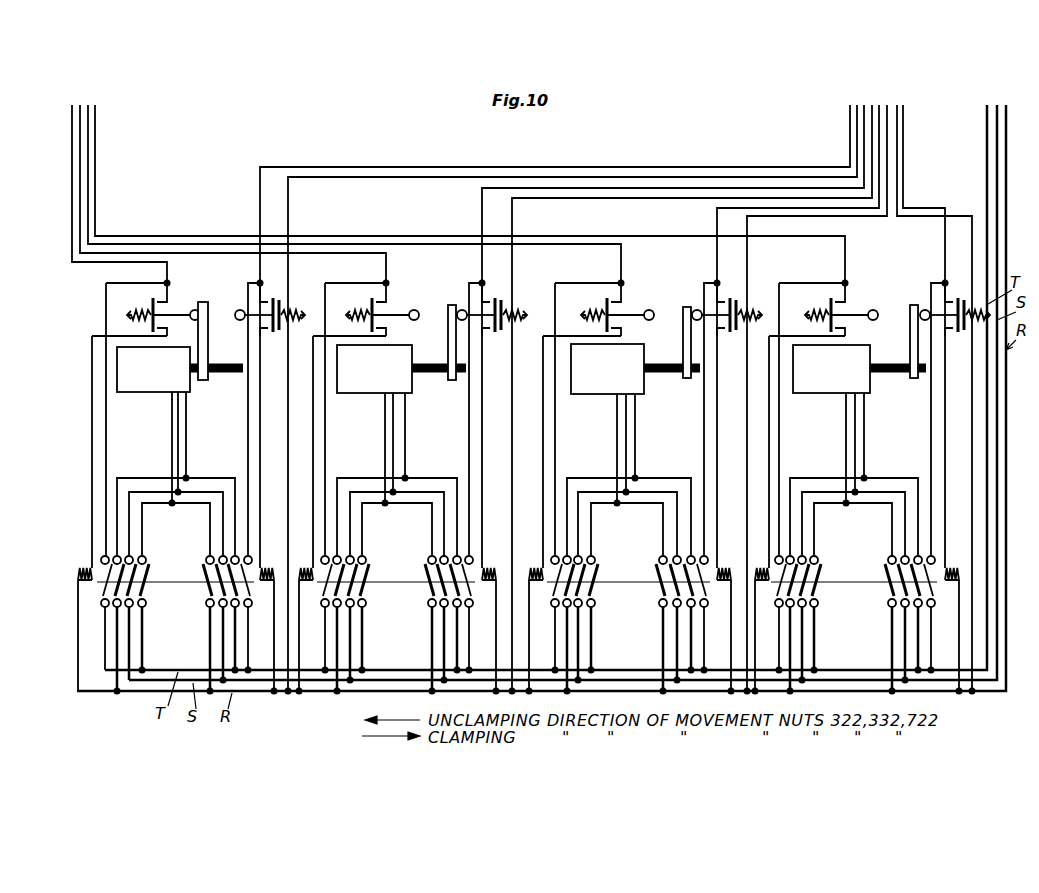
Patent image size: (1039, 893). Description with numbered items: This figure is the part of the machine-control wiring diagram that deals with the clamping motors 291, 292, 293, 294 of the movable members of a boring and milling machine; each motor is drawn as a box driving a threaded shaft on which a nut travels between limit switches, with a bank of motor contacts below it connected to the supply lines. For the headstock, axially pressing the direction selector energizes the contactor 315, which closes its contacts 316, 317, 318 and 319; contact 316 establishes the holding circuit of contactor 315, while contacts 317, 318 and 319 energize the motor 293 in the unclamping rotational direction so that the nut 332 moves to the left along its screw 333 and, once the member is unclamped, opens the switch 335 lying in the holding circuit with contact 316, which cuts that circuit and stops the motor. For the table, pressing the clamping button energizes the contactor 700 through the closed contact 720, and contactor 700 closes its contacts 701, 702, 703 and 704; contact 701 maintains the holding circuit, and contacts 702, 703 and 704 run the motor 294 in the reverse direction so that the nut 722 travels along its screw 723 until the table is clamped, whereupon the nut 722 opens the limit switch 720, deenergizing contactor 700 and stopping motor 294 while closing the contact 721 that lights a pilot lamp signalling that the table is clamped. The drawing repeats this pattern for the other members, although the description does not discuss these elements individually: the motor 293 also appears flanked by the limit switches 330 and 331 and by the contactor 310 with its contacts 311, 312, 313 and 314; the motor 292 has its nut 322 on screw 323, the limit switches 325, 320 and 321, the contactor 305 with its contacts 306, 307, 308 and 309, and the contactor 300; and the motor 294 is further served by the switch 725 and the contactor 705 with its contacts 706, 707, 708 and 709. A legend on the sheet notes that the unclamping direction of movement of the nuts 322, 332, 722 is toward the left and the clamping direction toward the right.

The clamping motor 291 is at (831, 369).
The clamping motor 292 is at (607, 369).
The clamping motor 293 is at (374, 369).
The clamping motor 294 is at (153, 369).
The relay coil 300 is at (729, 574).
The relay coil 305 is at (540, 570).
The switch contact 306 is at (558, 590).
The switch contact 307 is at (590, 598).
The switch contact 308 is at (585, 588).
The switch contact 309 is at (594, 572).
The relay coil 310 is at (494, 573).
The switch contact 311 is at (470, 588).
The switch contact 312 is at (453, 600).
The switch contact 313 is at (440, 594).
The switch contact 314 is at (428, 592).
The contactor 315 is at (309, 570).
The contact 316 is at (330, 586).
The contact 317 is at (344, 574).
The contact 318 is at (354, 584).
The contact 319 is at (366, 592).
The limit switch contact 320 is at (730, 304).
The limit switch contact 321 is at (741, 302).
The nut 322 is at (681, 322).
The screw 323 is at (680, 374).
The limit switch contact 325 is at (605, 302).
The limit switch contact 330 is at (497, 304).
The limit switch contact 331 is at (506, 302).
The nut 332 is at (446, 322).
The screw 333 is at (440, 374).
The switch 335 is at (370, 302).
The contactor 700 is at (273, 573).
The contact 701 is at (250, 587).
The contact 702 is at (230, 596).
The contact 703 is at (218, 590).
The contact 704 is at (206, 582).
The relay coil 705 is at (79, 576).
The switch contact 706 is at (112, 583).
The switch contact 707 is at (122, 586).
The switch contact 708 is at (134, 574).
The switch contact 709 is at (144, 589).
The limit switch 720 is at (272, 302).
The contact 721 is at (283, 302).
The nut 722 is at (204, 306).
The screw 723 is at (220, 374).
The limit switch contact 725 is at (150, 302).